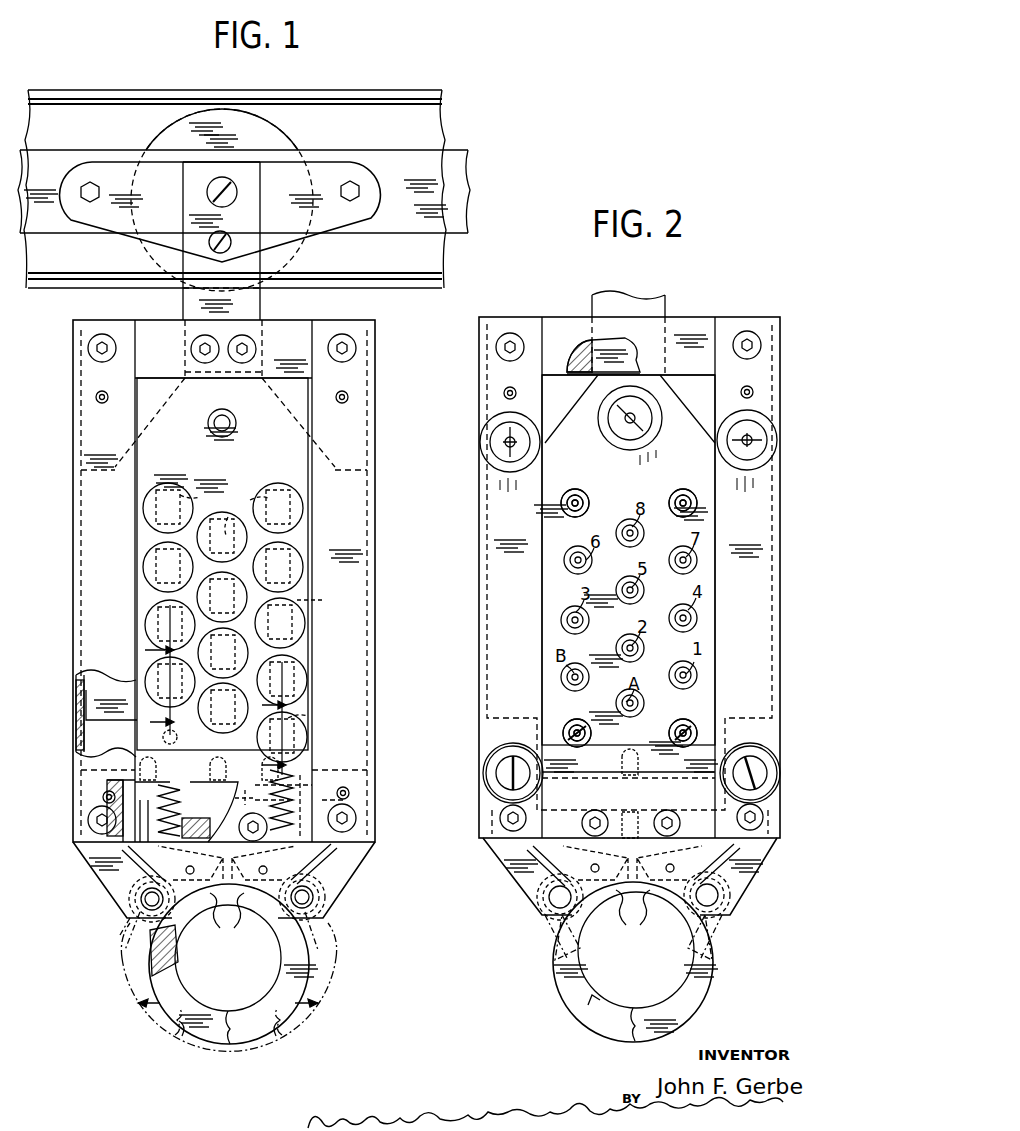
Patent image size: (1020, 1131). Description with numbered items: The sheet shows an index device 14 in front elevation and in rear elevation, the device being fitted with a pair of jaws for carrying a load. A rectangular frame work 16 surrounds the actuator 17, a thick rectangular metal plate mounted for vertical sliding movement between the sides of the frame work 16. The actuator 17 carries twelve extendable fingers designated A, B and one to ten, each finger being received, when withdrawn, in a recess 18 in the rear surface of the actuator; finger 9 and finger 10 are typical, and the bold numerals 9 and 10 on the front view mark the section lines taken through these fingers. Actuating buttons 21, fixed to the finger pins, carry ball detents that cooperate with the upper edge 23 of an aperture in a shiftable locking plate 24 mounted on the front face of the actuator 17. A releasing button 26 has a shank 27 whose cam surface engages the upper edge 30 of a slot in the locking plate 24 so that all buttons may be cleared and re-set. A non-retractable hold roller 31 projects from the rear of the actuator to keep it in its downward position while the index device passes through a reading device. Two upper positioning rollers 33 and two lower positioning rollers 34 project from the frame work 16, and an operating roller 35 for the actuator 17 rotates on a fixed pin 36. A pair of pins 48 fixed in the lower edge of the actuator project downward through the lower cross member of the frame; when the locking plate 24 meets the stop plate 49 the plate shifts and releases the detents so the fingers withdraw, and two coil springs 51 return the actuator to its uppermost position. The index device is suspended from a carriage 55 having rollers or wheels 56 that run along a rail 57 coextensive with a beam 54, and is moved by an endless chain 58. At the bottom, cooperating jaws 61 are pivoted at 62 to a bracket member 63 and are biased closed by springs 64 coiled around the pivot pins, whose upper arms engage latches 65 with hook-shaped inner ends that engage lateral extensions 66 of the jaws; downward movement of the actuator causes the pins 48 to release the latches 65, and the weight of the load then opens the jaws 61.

In FIG. 1, the index device 14 is at (478, 385).
In FIG. 2, the index device 14 is at (436, 350).
In FIG. 1, the rectangular frame work 16 is at (160, 338).
In FIG. 2, the rectangular frame work 16 is at (678, 330).
In FIG. 1, the actuator 17 is at (292, 420).
In FIG. 2, the actuator 17 is at (641, 481).
In FIG. 2, the recess 18 is at (583, 667).
In FIG. 1, the actuating buttons 21 is at (298, 575).
In FIG. 1, the upper edge of aperture in locking plate 23 is at (263, 547).
In FIG. 1, the locking plate 24 is at (272, 471).
In FIG. 1, the releasing button 26 is at (298, 744).
In FIG. 2, the shank 27 is at (577, 718).
In FIG. 1, the upper edge of slot in locking plate 30 is at (300, 718).
In FIG. 1, the hold roller 31 is at (163, 737).
In FIG. 2, the hold roller 31 is at (695, 720).
In FIG. 2, the upper guide or positioning rollers 33 is at (760, 443).
In FIG. 2, the lower guide or positioning rollers 34 is at (766, 765).
In FIG. 2, the operating roller 35 is at (610, 423).
In FIG. 1, the fixed pin 36 is at (210, 422).
In FIG. 1, the pins 48 is at (308, 808).
In FIG. 1, the stop plate 49 is at (261, 801).
In FIG. 1, the coil springs 51 is at (180, 800).
In FIG. 1, the beam 54 is at (418, 122).
In FIG. 1, the carriage 55 is at (285, 175).
In FIG. 1, the rollers or wheels 56 is at (180, 150).
In FIG. 1, the rail 57 is at (415, 266).
In FIG. 1, the endless chain 58 is at (440, 175).
In FIG. 1, the pivoted jaws 61 is at (247, 1045).
In FIG. 2, the pivoted jaws 61 is at (657, 1000).
In FIG. 1, the pivots 62 is at (308, 898).
In FIG. 2, the pivots 62 is at (712, 895).
In FIG. 1, the bracket member 63 is at (338, 858).
In FIG. 2, the bracket member 63 is at (745, 862).
In FIG. 1, the springs 64 is at (325, 940).
In FIG. 2, the springs 64 is at (746, 937).
In FIG. 1, the latches 65 is at (305, 865).
In FIG. 2, the latches 65 is at (660, 860).
In FIG. 1, the lateral extensions 66 is at (227, 918).
In FIG. 2, the lateral extensions 66 is at (633, 908).
In FIG. 1, the extendable finger and button 9 is at (144, 670).
In FIG. 2, the extendable finger and button 9 is at (585, 487).
In FIG. 1, the extendable finger and button 10 is at (261, 721).
In FIG. 2, the extendable finger and button 10 is at (685, 498).